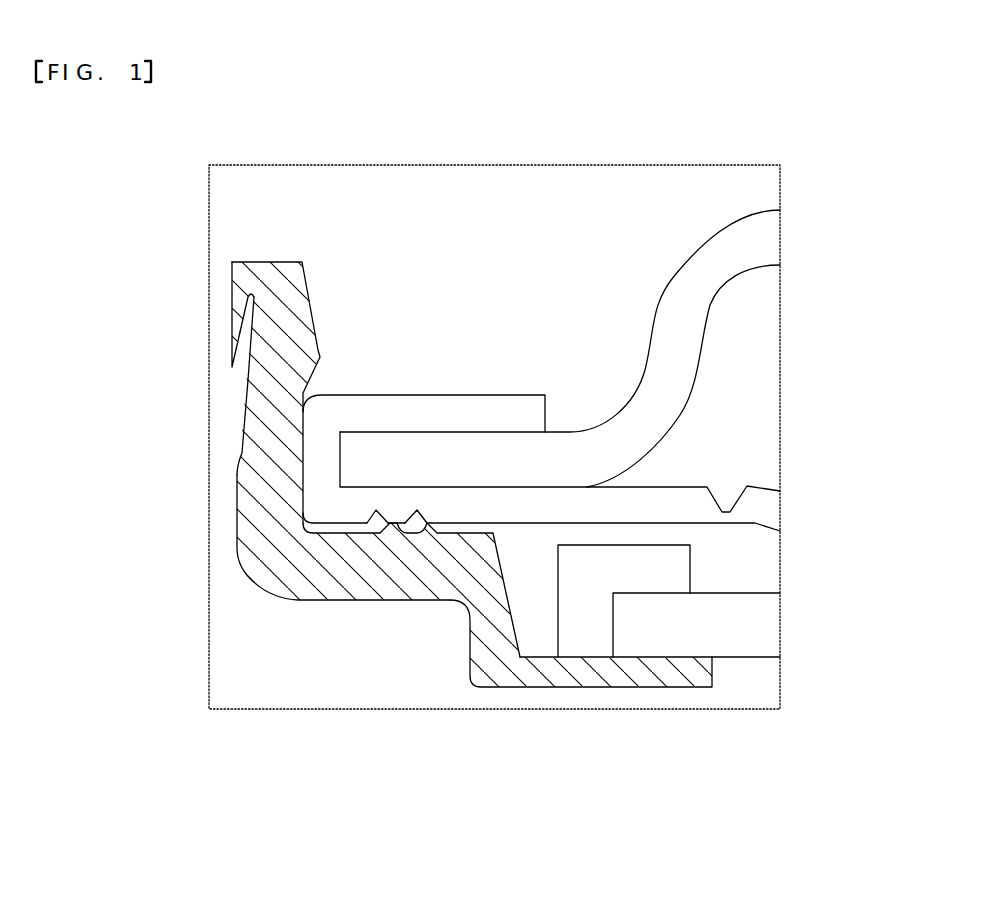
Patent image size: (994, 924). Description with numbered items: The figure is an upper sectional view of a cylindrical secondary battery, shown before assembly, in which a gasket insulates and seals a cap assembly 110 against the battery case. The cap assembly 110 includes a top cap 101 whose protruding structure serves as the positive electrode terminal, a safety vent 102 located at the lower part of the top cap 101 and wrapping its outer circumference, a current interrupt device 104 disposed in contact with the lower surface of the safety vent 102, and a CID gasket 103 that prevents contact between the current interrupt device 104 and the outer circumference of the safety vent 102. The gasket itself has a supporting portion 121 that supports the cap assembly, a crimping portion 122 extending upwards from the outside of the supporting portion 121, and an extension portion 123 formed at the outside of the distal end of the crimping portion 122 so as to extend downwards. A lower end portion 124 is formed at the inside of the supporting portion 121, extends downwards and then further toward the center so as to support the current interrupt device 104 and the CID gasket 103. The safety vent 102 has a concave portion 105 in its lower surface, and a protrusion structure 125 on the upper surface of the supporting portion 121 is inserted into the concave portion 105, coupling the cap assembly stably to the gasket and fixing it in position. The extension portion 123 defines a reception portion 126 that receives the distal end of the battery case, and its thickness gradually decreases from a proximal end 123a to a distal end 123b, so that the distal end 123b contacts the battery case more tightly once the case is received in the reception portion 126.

The top cap 101 is at (703, 285).
The safety vent 102 is at (663, 497).
The CID gasket 103 is at (668, 565).
The current interrupt device 104 is at (730, 625).
The concave portion 105 is at (367, 513).
The cap assembly 110 is at (608, 433).
The supporting portion 121 is at (325, 600).
The crimping portion 122 is at (247, 455).
The extension portion 123 is at (143, 322).
The proximal end of the extension portion 123a is at (231, 308).
The distal end of the extension portion 123b is at (231, 368).
The lower end portion 124 is at (470, 648).
The protrusion structure 125 is at (390, 527).
The reception portion 126 is at (244, 360).